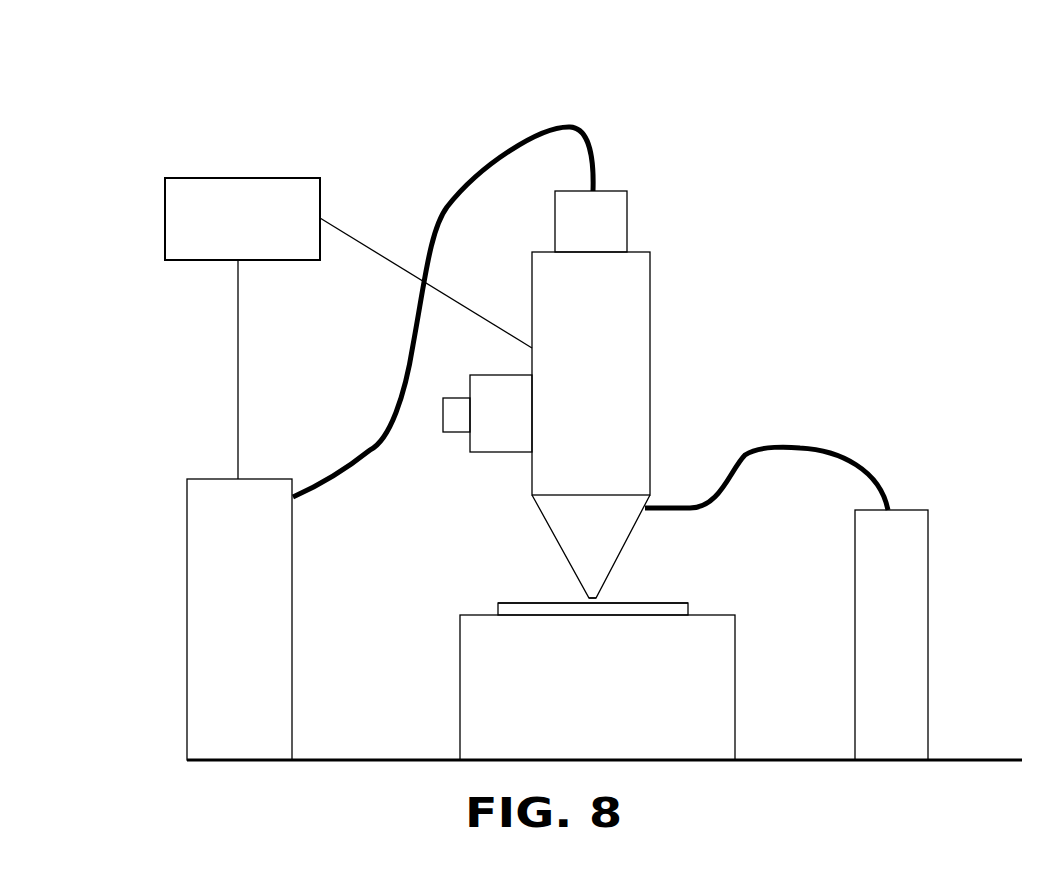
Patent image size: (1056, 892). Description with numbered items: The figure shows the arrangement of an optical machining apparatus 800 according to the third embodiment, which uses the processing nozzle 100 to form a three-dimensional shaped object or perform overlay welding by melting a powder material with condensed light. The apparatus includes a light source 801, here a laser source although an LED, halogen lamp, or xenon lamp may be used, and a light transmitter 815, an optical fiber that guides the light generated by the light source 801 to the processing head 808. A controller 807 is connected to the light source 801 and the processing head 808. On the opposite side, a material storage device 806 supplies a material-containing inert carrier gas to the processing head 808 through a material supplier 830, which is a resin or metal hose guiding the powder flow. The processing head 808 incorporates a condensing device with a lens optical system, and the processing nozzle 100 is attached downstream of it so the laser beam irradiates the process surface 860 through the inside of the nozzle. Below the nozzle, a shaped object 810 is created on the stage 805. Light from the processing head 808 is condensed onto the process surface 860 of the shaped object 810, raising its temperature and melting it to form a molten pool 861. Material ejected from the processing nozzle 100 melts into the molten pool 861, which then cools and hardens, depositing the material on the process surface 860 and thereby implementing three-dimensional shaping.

The optical machining apparatus 800 is at (147, 125).
The controller 807 is at (165, 218).
The light transmitter 815 is at (440, 210).
The processing head 808 is at (650, 282).
The processing nozzle 100 is at (566, 562).
The molten pool 861 is at (600, 598).
The light source 801 is at (210, 478).
The material supplier 830 is at (803, 450).
The material storage device 806 is at (928, 632).
The stage 805 is at (460, 684).
The process surface 860 is at (497, 601).
The shaped object 810 is at (688, 608).